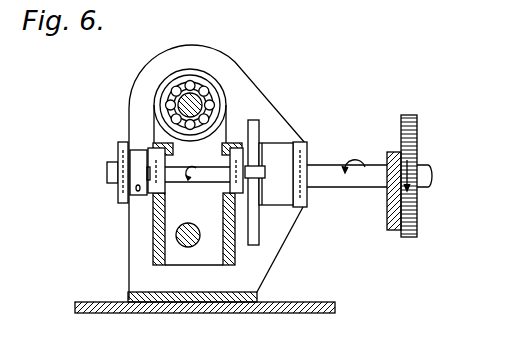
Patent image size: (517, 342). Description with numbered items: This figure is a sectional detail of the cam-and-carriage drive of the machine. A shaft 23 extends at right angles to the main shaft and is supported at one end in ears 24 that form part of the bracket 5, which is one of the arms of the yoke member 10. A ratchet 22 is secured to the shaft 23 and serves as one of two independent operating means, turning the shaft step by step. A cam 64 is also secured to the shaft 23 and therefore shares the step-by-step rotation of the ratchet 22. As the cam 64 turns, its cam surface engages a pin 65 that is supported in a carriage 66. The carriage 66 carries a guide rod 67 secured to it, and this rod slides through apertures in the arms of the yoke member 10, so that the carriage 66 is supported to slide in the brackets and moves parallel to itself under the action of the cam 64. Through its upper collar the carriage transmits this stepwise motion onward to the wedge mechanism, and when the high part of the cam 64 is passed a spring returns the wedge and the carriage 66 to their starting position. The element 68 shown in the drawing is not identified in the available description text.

The bracket 5 is at (158, 62).
The yoke member 10 is at (254, 298).
The ratchet 22 is at (410, 237).
The shaft 23 is at (325, 173).
The ears 24 is at (118, 147).
The cam 64 is at (257, 121).
The pin 65 is at (262, 178).
The carriage 66 is at (215, 255).
The guide rod 67 is at (185, 243).
The intermediate shaft with bearings 68 is at (230, 190).